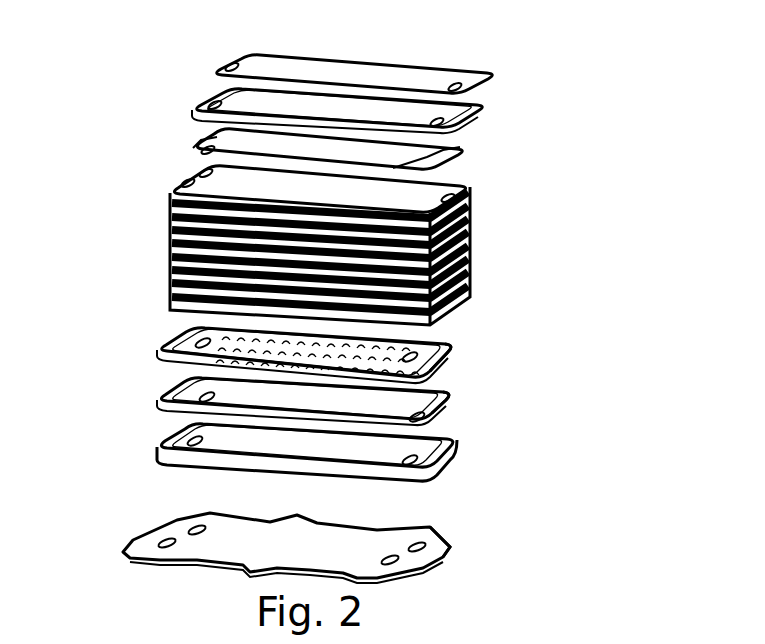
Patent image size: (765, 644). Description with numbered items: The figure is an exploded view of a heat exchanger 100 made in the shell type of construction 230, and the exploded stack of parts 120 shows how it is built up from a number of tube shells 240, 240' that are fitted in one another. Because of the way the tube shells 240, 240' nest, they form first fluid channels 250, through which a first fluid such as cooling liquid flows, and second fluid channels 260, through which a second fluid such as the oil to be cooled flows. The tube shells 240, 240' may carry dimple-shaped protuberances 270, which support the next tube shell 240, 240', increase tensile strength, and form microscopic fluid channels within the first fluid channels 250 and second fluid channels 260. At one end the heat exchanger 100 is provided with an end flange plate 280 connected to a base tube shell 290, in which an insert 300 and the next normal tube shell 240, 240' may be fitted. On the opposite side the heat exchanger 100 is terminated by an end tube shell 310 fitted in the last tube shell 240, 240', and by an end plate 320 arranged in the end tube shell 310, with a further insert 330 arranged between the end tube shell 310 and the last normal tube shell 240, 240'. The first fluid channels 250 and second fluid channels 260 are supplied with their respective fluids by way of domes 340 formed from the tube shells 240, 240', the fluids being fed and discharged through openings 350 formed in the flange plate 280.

The heat exchanger 100 is at (640, 115).
The plate stack 120 is at (130, 218).
The shell type of construction 230 is at (520, 277).
The tube shell 240 is at (404, 297).
The tube shell 240' is at (502, 353).
The first fluid channel 250 is at (440, 330).
The second fluid channel 260 is at (457, 393).
The dimple-shaped protuberances 270 is at (185, 335).
The end flange plate 280 is at (447, 535).
The base tube shell 290 is at (460, 457).
The insert 300 is at (460, 450).
The end tube shell 310 is at (487, 108).
The end plate 320 is at (497, 76).
The insert 330 is at (470, 153).
The domes 340 is at (205, 152).
The openings 350 is at (447, 550).